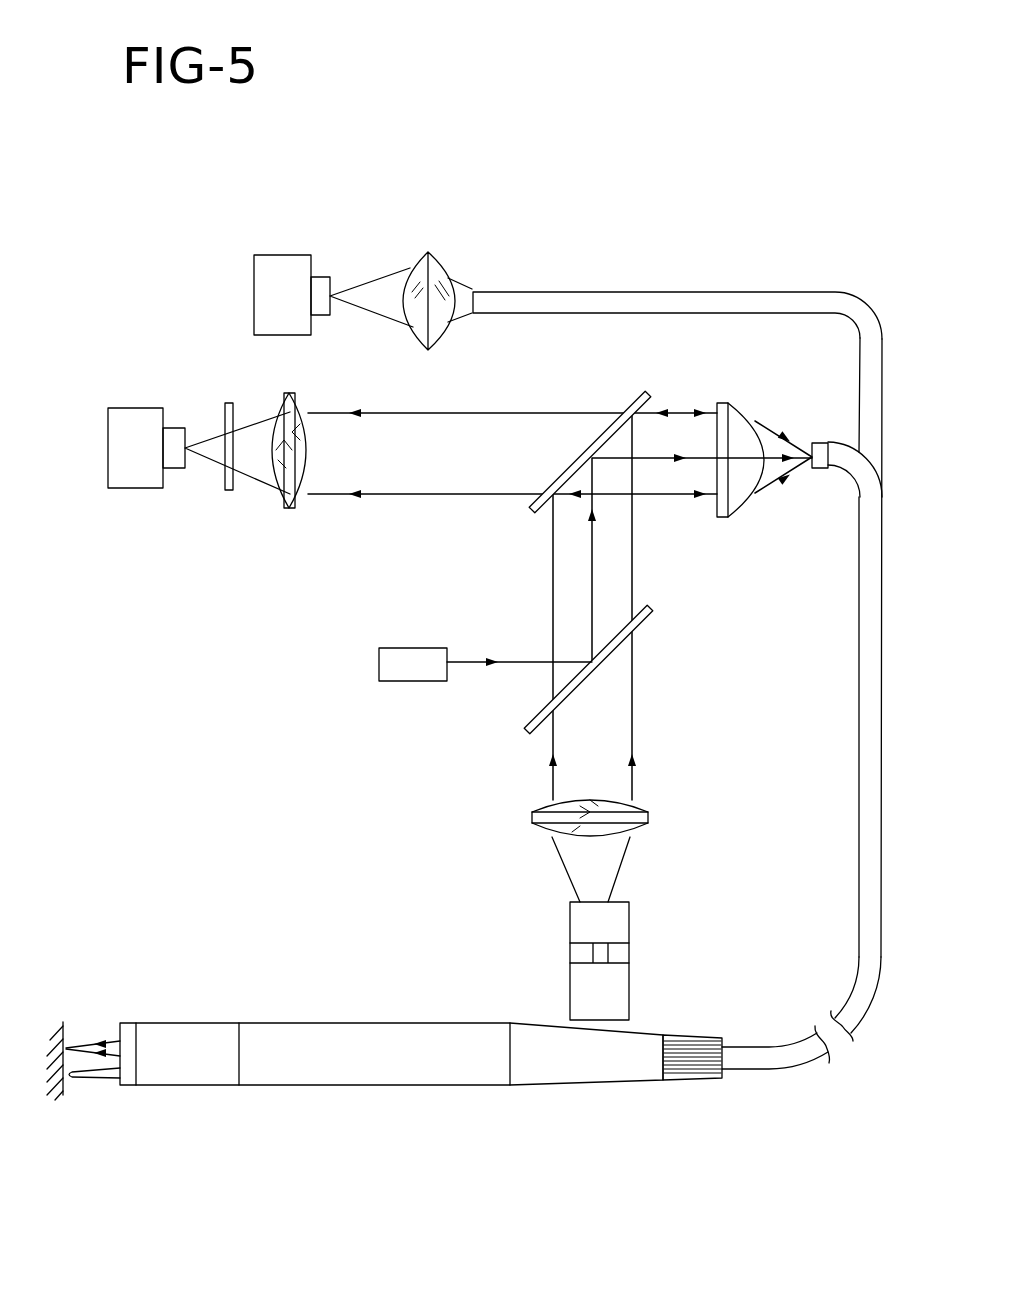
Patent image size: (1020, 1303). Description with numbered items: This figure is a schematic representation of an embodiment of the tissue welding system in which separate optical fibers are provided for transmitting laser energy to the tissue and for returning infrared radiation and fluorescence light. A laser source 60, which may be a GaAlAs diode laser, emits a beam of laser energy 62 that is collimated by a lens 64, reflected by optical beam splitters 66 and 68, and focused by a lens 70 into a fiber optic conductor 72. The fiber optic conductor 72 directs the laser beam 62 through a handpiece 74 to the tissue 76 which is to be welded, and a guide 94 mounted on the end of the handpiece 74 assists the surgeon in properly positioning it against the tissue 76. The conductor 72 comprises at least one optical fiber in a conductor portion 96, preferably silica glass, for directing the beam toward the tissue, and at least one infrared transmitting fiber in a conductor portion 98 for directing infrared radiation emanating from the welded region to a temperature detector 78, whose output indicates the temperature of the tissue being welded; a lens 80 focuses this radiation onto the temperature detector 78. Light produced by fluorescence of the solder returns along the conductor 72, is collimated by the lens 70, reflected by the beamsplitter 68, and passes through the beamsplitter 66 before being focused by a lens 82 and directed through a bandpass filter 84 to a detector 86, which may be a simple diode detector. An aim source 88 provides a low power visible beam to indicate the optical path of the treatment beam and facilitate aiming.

The laser source 60 is at (618, 922).
The beam of laser energy 62 is at (605, 860).
The lens 64 is at (648, 818).
The optical beam splitter 66 is at (650, 610).
The optical beam splitter 68 is at (647, 393).
The lens 70 is at (735, 512).
The fiber optic conductor 72 is at (857, 705).
The handpiece 74 is at (315, 1032).
The tissue 76 is at (58, 1035).
The temperature detector 78 is at (254, 279).
The lens 80 is at (430, 253).
The lens 82 is at (288, 503).
The filter 84 is at (230, 400).
The detector 86 is at (128, 483).
The aim source 88 is at (410, 653).
The guide 94 is at (98, 1082).
The conductor portion 96 is at (826, 472).
The conductor portion 98 is at (617, 295).